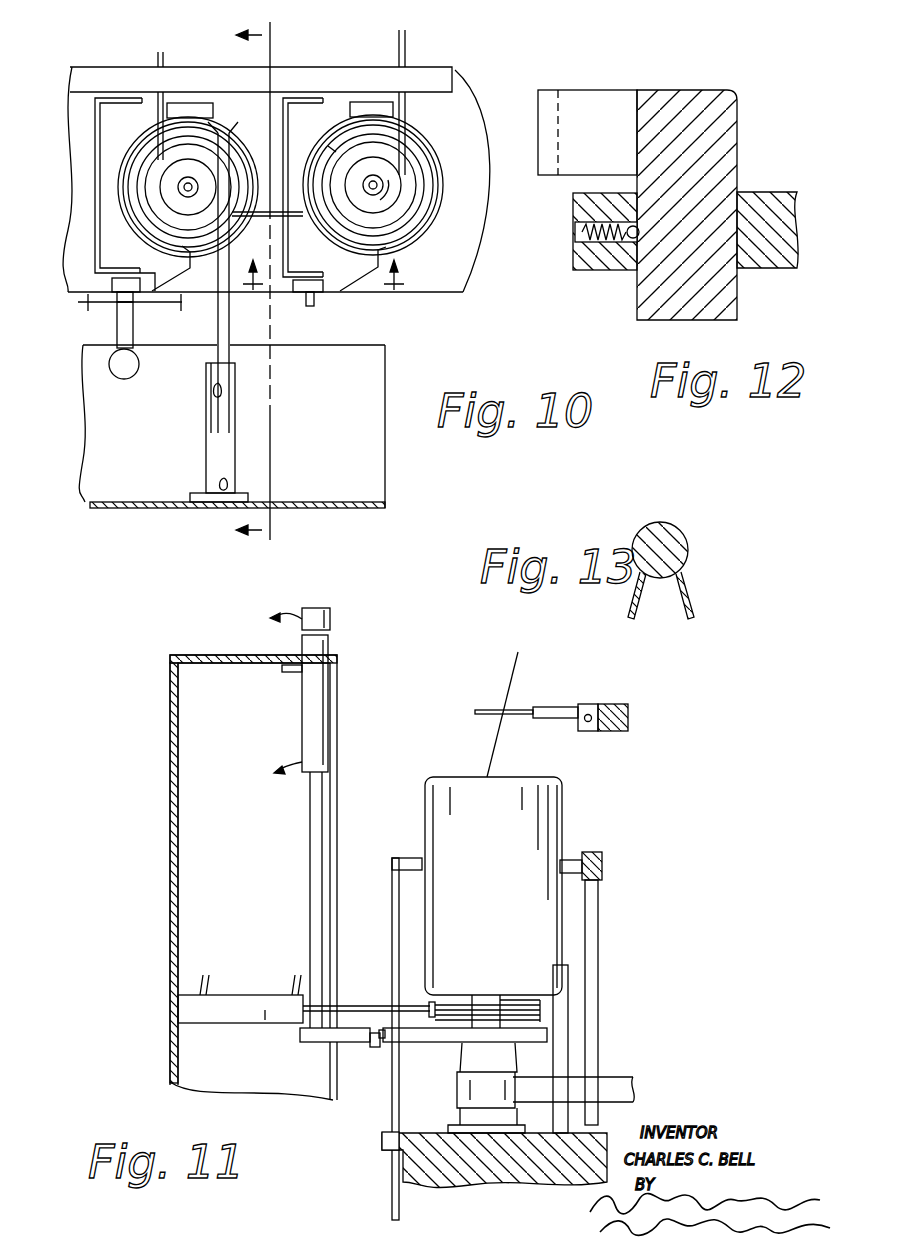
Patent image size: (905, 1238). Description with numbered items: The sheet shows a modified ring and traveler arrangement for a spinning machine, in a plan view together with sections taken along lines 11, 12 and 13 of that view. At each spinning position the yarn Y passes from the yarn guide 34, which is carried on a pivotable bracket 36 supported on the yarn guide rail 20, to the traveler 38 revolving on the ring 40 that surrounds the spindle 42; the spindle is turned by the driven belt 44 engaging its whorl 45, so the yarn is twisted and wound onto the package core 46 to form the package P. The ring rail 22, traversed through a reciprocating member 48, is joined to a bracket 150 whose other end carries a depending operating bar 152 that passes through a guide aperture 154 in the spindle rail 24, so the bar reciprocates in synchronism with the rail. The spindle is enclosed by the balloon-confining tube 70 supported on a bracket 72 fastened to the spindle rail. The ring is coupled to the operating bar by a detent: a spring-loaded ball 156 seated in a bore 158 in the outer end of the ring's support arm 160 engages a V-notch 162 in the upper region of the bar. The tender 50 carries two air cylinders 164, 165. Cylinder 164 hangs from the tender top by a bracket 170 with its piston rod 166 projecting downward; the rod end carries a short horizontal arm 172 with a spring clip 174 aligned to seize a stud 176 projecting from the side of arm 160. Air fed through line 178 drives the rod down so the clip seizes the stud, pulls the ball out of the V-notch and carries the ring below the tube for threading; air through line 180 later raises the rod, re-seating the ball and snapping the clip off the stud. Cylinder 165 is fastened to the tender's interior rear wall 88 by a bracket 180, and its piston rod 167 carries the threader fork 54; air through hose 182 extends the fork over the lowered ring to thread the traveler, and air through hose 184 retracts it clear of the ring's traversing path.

In FIG. 11, the yarn guide rail 20 is at (620, 704).
In FIG. 10, the ring rail 22 is at (432, 82).
In FIG. 11, the ring rail 22 is at (604, 855).
In FIG. 10, the spindle rail 24 is at (70, 260).
In FIG. 11, the spindle rail 24 is at (508, 1184).
In FIG. 11, the yarn guide 34 is at (560, 708).
In FIG. 11, the pivotable bracket 36 is at (513, 711).
In FIG. 10, the traveler 38 is at (348, 190).
In FIG. 10, the ring 40 is at (402, 160).
In FIG. 10, the spindle 42 is at (178, 186).
In FIG. 10, the driven belt 44 is at (406, 46).
In FIG. 11, the driven belt 44 is at (618, 1080).
In FIG. 10, the whorl 45 is at (165, 198).
In FIG. 11, the whorl 45 is at (478, 1054).
In FIG. 10, the package core 46 is at (392, 182).
In FIG. 11, the reciprocating member 48 is at (600, 900).
In FIG. 10, the tender 50 is at (145, 507).
In FIG. 11, the tender 50 is at (165, 800).
In FIG. 10, the threader fork 54 is at (226, 136).
In FIG. 11, the threader fork 54 is at (540, 1006).
In FIG. 11, the tube 70 is at (493, 886).
In FIG. 10, the bracket 72 is at (190, 100).
In FIG. 11, the bracket 72 is at (562, 1018).
In FIG. 11, the interior rear wall 88 is at (178, 858).
In FIG. 10, the bracket 150 is at (95, 146).
In FIG. 12, the bracket 150 is at (588, 90).
In FIG. 11, the bracket 150 is at (412, 858).
In FIG. 10, the operating bar 152 is at (318, 298).
In FIG. 12, the operating bar 152 is at (698, 90).
In FIG. 11, the operating bar 152 is at (392, 885).
In FIG. 11, the guide aperture 154 is at (380, 1141).
In FIG. 12, the spring-loaded ball 156 is at (616, 246).
In FIG. 12, the bore 158 is at (578, 240).
In FIG. 10, the support arm 160 is at (310, 272).
In FIG. 12, the support arm 160 is at (777, 192).
In FIG. 12, the V-notch 162 is at (645, 228).
In FIG. 10, the air cylinder 164 is at (112, 366).
In FIG. 11, the air cylinder 164 is at (302, 727).
In FIG. 10, the air cylinder 165 is at (210, 436).
In FIG. 11, the air cylinder 165 is at (248, 1022).
In FIG. 11, the piston rod 166 is at (310, 805).
In FIG. 10, the piston rod 167 is at (222, 330).
In FIG. 11, the piston rod 167 is at (343, 1004).
In FIG. 11, the bracket 170 is at (282, 672).
In FIG. 10, the horizontal arm 172 is at (118, 340).
In FIG. 11, the horizontal arm 172 is at (322, 1042).
In FIG. 10, the spring clip 174 is at (135, 305).
In FIG. 13, the spring clip 174 is at (690, 604).
In FIG. 11, the spring clip 174 is at (370, 1046).
In FIG. 10, the stud 176 is at (150, 276).
In FIG. 13, the stud 176 is at (668, 538).
In FIG. 11, the stud 176 is at (384, 1030).
In FIG. 11, the line 178 is at (290, 612).
In FIG. 10, the line 180 is at (245, 496).
In FIG. 11, the line 180 is at (300, 762).
In FIG. 10, the hose 182 is at (215, 484).
In FIG. 11, the hose 182 is at (205, 975).
In FIG. 10, the air hose 184 is at (210, 388).
In FIG. 11, the air hose 184 is at (292, 980).
In FIG. 10, the section line 11— 11 is at (269, 283).
In FIG. 10, the section line 12— 12 is at (326, 286).
In FIG. 10, the section line 13— 13 is at (131, 312).
In FIG. 10, the yarn Y is at (322, 166).
In FIG. 11, the yarn Y is at (500, 661).
In FIG. 10, the package P is at (398, 186).